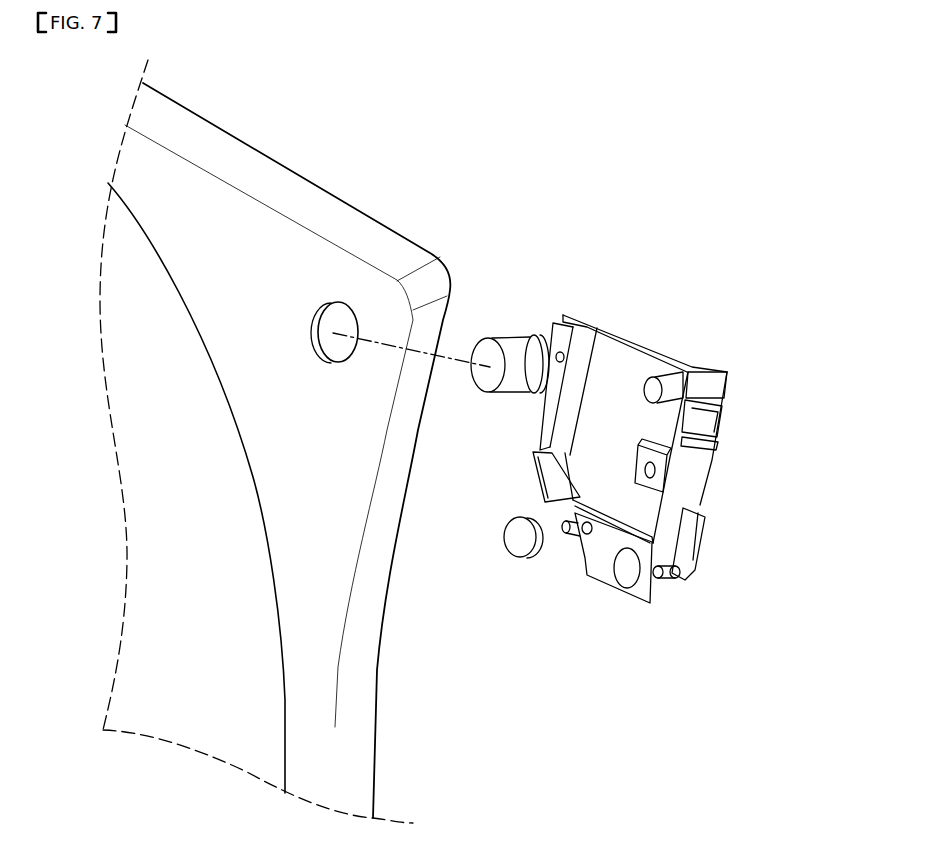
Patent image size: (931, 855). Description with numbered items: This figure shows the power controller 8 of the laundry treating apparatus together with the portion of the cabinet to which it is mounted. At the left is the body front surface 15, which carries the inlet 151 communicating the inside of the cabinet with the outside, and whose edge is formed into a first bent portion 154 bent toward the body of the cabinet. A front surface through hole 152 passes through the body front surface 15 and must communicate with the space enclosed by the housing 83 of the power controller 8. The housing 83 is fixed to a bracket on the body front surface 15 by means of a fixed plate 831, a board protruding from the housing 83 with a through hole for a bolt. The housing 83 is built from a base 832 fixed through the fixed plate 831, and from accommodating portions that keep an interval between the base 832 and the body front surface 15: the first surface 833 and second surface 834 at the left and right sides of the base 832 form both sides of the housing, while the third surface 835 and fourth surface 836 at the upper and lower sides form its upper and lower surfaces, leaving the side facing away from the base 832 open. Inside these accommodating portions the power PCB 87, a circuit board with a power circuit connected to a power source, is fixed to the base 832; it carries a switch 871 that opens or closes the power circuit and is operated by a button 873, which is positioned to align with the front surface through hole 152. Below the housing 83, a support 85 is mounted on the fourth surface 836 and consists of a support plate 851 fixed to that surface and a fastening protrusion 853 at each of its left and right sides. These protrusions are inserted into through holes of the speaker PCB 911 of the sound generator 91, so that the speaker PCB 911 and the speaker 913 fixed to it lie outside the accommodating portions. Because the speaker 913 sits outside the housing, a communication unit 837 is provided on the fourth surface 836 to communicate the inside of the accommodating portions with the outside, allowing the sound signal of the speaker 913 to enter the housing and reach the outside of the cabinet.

The body front surface 15 is at (302, 260).
The inlet 151 is at (221, 378).
The front surface through hole 152 is at (344, 322).
The first bent portion 154 is at (247, 173).
The power controller 8 is at (648, 294).
The housing 83 is at (790, 300).
The fixed plate 831 is at (557, 333).
The base 832 is at (702, 458).
The first surface 833 is at (578, 360).
The second surface 834 is at (712, 390).
The third surface 835 is at (700, 360).
The fourth surface 836 is at (655, 495).
The communication unit 837 is at (540, 496).
The support 85 is at (760, 546).
The support plate 851 is at (688, 545).
The fastening protrusion 853 is at (680, 577).
The power PCB 87 is at (610, 435).
The switch 871 is at (644, 392).
The button 873 is at (515, 340).
The sound generator 91 is at (570, 635).
The speaker PCB 911 is at (588, 578).
The speaker 913 is at (512, 555).